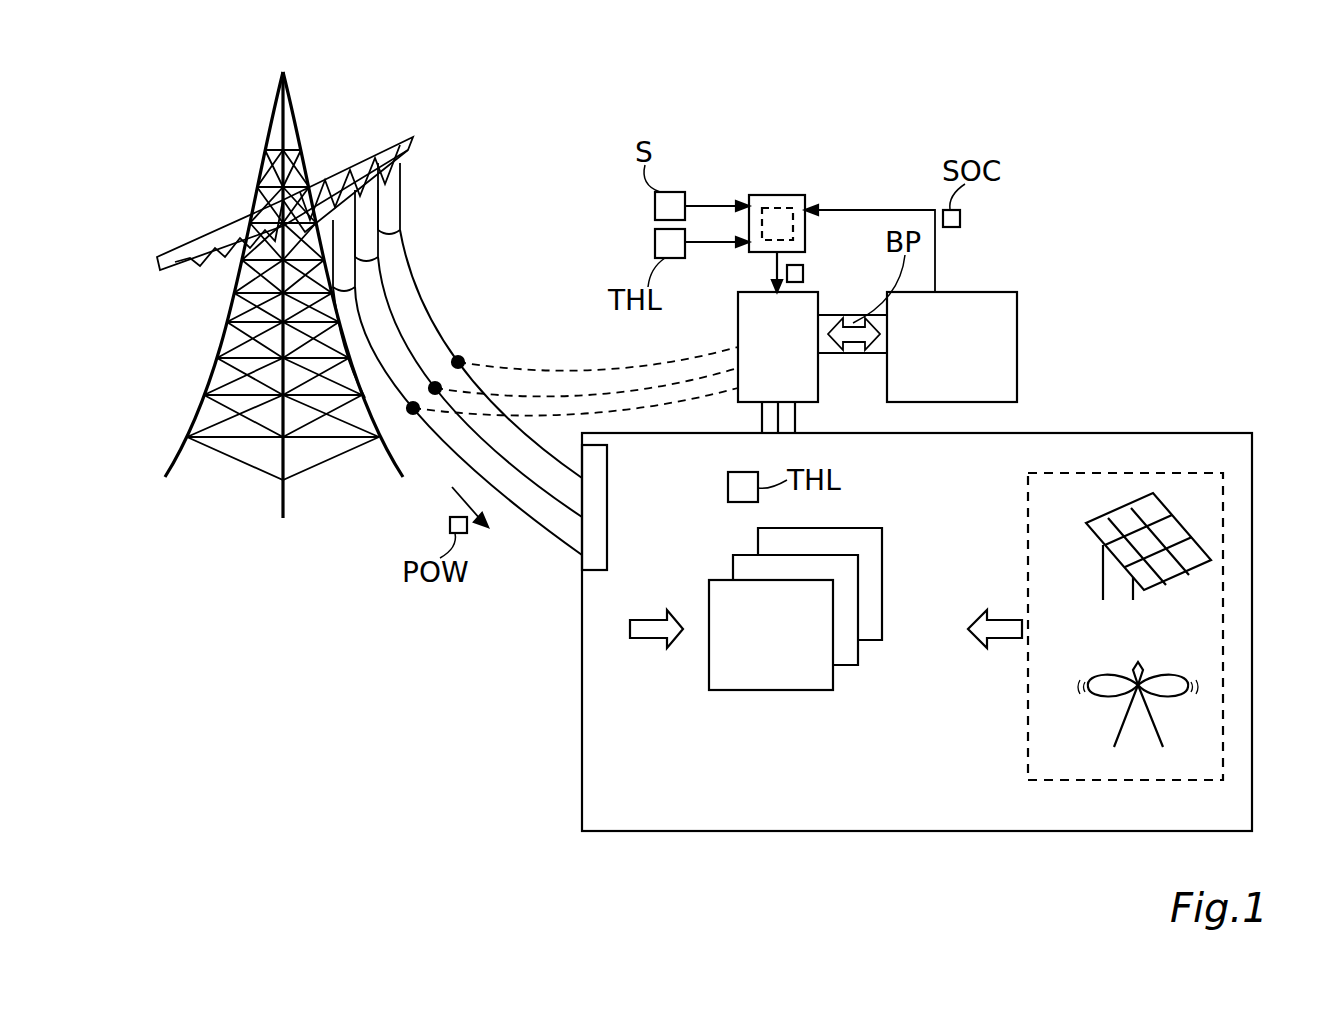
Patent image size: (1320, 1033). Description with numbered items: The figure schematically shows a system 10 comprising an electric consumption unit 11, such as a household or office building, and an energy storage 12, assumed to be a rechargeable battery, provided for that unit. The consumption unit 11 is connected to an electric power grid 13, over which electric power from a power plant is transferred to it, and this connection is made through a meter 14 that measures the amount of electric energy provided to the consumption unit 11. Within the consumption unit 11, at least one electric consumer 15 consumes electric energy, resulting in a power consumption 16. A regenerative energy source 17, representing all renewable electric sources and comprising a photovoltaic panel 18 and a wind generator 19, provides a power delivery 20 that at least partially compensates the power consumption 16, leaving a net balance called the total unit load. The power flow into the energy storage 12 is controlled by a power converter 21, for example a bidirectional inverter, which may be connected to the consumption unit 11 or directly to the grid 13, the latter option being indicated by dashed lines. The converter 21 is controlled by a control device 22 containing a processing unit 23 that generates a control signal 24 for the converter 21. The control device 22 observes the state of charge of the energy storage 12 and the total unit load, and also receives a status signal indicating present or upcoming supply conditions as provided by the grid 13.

The system 10 is at (1180, 118).
The electric consumption unit 11 is at (1198, 433).
The energy storage 12 is at (992, 292).
The power grid 13 is at (383, 117).
The meter 14 is at (590, 572).
The electric consumer 15 is at (789, 692).
The power consumption 16 is at (660, 617).
The regenerative energy source 17 is at (1223, 492).
The photovoltaic panel 18 is at (1187, 530).
The wind generator 19 is at (1157, 723).
The power delivery 20 is at (1010, 618).
The power converter 21 is at (820, 388).
The control device 22 is at (798, 195).
The processing unit 23 is at (772, 208).
The control signal 24 is at (803, 273).